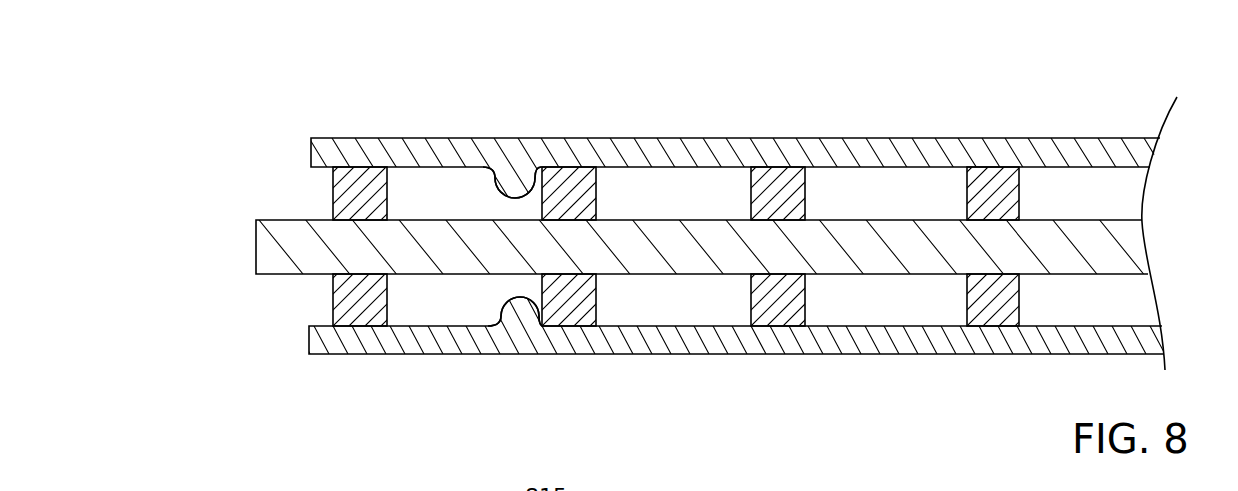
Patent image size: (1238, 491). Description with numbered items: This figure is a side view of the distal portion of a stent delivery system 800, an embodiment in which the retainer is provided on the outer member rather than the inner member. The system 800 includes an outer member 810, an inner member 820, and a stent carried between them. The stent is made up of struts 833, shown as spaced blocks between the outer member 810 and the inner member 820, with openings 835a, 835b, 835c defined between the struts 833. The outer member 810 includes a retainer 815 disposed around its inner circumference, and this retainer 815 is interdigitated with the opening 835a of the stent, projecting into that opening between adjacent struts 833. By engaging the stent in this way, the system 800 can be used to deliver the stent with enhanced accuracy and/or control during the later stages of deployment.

The stent delivery system 800 is at (300, 98).
The outer member 810 is at (352, 138).
The retainer 815 is at (520, 180).
The inner member 820 is at (305, 251).
The struts 833 is at (575, 318).
The opening 835a is at (465, 188).
The opening 835b is at (663, 187).
The opening 835c is at (893, 193).